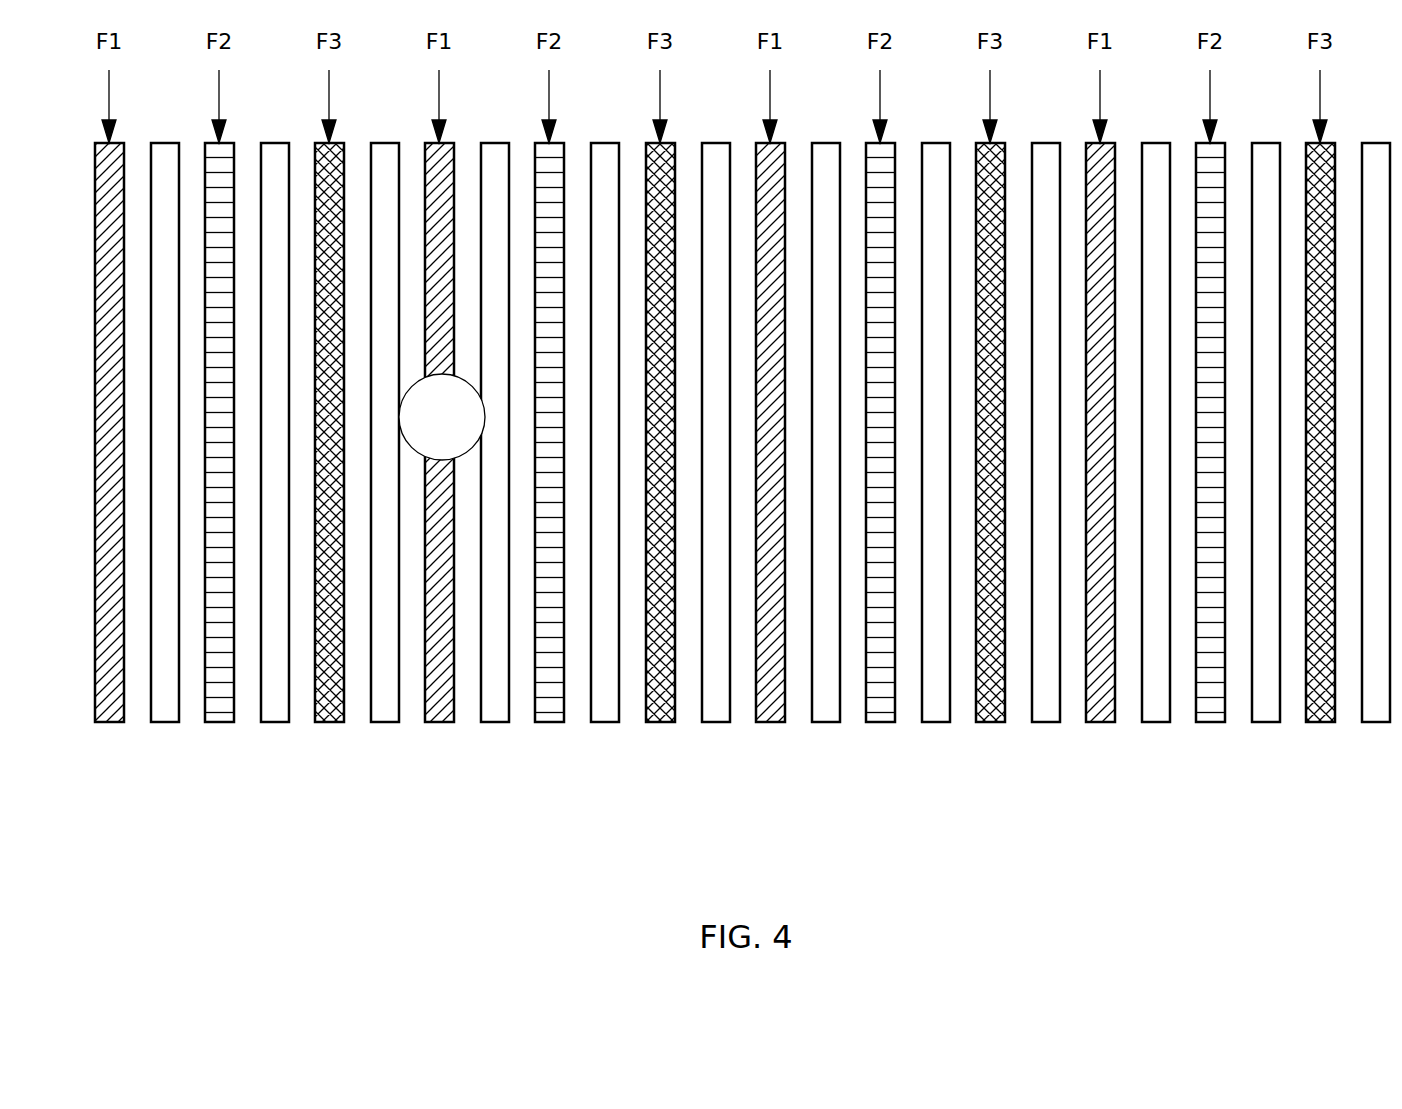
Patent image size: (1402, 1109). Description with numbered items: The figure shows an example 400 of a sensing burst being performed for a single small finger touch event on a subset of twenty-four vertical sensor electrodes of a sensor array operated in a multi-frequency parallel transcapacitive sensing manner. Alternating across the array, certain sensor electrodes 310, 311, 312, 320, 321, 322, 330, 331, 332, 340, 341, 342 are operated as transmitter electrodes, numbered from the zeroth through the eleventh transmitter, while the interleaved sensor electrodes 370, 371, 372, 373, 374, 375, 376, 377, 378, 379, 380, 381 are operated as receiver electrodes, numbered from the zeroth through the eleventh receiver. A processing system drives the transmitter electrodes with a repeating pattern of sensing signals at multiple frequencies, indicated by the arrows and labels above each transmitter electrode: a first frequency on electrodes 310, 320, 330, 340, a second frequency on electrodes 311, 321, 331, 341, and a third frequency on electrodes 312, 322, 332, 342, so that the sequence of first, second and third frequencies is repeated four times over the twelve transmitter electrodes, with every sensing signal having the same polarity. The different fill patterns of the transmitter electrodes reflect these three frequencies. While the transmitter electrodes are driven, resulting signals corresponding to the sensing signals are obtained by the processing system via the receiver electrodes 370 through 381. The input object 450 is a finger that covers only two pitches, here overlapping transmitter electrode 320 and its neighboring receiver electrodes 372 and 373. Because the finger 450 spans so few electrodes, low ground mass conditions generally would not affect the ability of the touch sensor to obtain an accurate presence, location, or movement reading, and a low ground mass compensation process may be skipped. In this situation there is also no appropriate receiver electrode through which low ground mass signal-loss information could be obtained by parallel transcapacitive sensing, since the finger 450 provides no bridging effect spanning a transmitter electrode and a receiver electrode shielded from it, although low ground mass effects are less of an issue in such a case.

The sensor electrode 310 is at (105, 722).
The sensor electrode 311 is at (215, 722).
The sensor electrode 312 is at (325, 722).
The sensor electrode 320 is at (435, 722).
The sensor electrode 321 is at (545, 722).
The sensor electrode 322 is at (656, 722).
The sensor electrode 330 is at (766, 722).
The sensor electrode 331 is at (876, 722).
The sensor electrode 332 is at (986, 722).
The sensor electrode 340 is at (1096, 722).
The sensor electrode 341 is at (1206, 722).
The sensor electrode 342 is at (1316, 722).
The sensor electrode 370 is at (171, 722).
The sensor electrode 371 is at (281, 722).
The sensor electrode 372 is at (391, 722).
The sensor electrode 373 is at (501, 722).
The sensor electrode 374 is at (611, 722).
The sensor electrode 375 is at (722, 722).
The sensor electrode 376 is at (832, 722).
The sensor electrode 377 is at (942, 722).
The sensor electrode 378 is at (1052, 722).
The sensor electrode 379 is at (1162, 722).
The sensor electrode 380 is at (1272, 722).
The sensor electrode 381 is at (1382, 722).
The example of a sensing burst 400 is at (889, 936).
The input object 450 is at (442, 417).